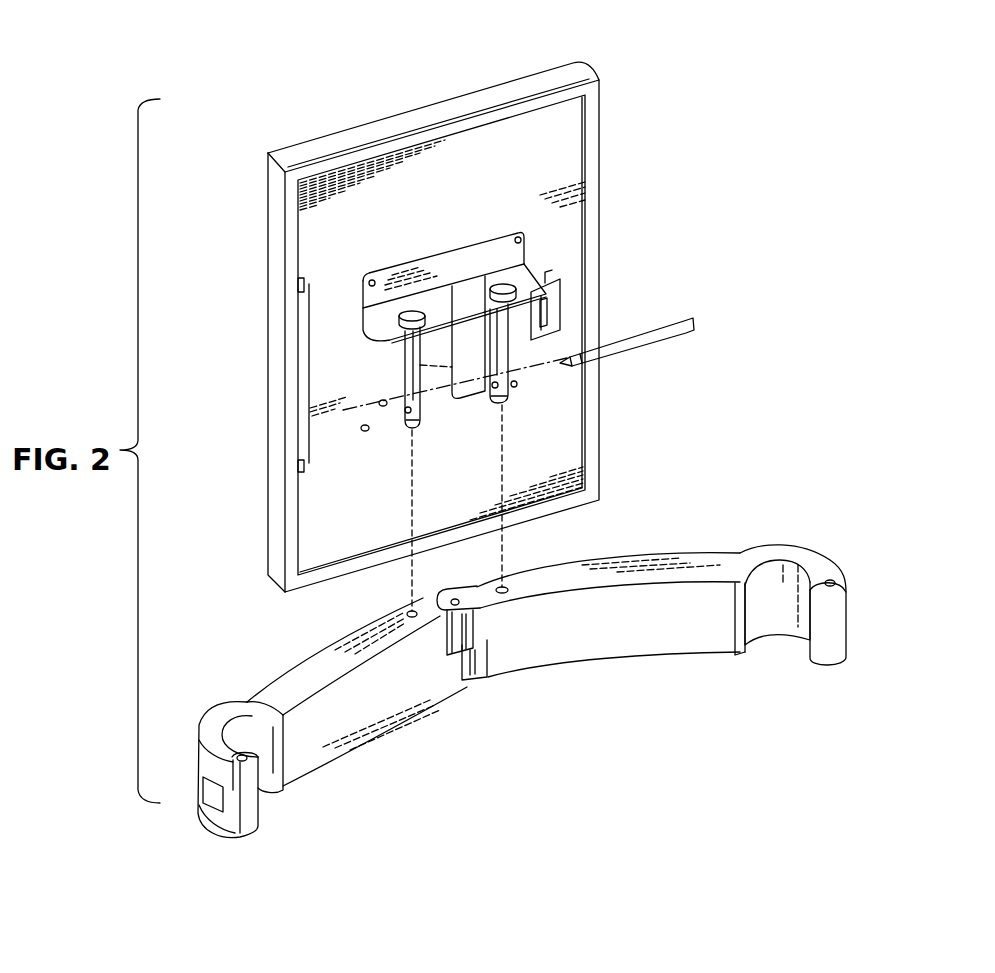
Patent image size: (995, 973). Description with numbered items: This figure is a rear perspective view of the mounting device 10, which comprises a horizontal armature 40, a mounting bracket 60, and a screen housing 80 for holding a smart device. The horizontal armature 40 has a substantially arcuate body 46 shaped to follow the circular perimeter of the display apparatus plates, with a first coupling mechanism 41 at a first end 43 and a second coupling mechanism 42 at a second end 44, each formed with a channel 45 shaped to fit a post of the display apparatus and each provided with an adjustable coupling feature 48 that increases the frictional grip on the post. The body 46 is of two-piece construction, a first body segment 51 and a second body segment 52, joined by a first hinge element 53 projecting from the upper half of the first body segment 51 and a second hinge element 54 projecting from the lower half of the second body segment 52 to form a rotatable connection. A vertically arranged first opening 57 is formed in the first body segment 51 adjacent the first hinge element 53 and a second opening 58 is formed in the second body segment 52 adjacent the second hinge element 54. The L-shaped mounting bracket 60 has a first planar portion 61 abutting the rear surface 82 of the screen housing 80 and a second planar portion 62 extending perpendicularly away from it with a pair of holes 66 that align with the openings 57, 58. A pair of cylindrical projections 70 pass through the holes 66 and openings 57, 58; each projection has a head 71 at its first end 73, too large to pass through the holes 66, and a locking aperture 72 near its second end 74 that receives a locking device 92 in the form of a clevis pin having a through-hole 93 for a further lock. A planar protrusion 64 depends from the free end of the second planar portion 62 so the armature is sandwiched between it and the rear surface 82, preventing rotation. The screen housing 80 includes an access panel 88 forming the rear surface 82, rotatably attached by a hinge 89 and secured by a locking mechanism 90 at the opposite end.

The mounting device 10 is at (642, 85).
The horizontal armature 40 is at (498, 685).
The first coupling mechanism 41 is at (800, 552).
The second coupling mechanism 42 is at (212, 720).
The first end 43 is at (742, 556).
The second end 44 is at (248, 704).
The channel 45 is at (265, 740).
The body 46 is at (604, 660).
The adjustable coupling feature 48 is at (205, 792).
The first body segment 51 is at (680, 565).
The second body segment 52 is at (306, 662).
The first hinge element 53 is at (472, 625).
The second hinge element 54 is at (460, 680).
The first opening 57 is at (506, 588).
The second opening 58 is at (406, 612).
The mounting bracket 60 is at (345, 318).
The first planar portion 61 is at (388, 284).
The second planar portion 62 is at (385, 336).
The protrusion 64 is at (462, 390).
The holes 66 is at (495, 316).
The projections 70 is at (404, 382).
The head 71 is at (412, 316).
The locking aperture 72 is at (404, 412).
The first end 73 is at (395, 320).
The second end 74 is at (410, 432).
The screen housing 80 is at (258, 162).
The rear surface 82 is at (466, 122).
The access panel 88 is at (543, 128).
The hinge 89 is at (298, 287).
The locking mechanism 90 is at (565, 294).
The locking device 92 is at (672, 340).
The through-hole 93 is at (592, 366).